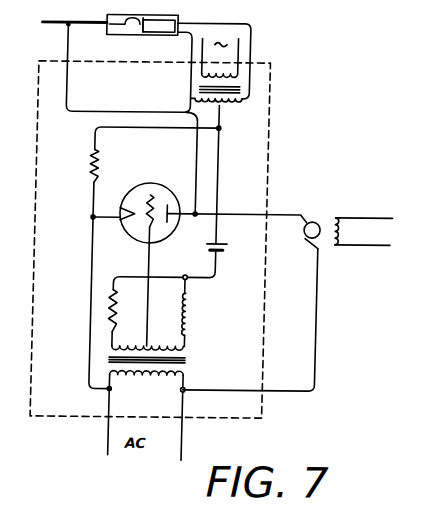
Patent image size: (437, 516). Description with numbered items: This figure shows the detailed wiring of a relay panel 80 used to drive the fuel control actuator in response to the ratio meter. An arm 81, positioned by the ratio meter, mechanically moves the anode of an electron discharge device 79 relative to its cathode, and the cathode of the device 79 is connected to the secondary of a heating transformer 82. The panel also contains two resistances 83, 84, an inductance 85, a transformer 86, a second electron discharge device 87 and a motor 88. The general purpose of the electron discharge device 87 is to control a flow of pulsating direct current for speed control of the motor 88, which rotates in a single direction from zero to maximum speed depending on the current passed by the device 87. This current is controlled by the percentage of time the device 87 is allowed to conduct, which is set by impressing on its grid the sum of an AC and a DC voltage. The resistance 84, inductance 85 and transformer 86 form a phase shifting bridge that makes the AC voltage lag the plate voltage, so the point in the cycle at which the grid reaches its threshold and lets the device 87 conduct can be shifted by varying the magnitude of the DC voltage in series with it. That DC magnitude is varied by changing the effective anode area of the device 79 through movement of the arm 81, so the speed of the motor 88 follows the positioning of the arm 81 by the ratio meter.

The electron discharge device 79 is at (146, 2).
The relay panel 80 is at (268, 158).
The arm 81 is at (91, 20).
The heating transformer 82 is at (247, 103).
The resistance 83 is at (110, 165).
The resistance 84 is at (125, 311).
The inductance 85 is at (201, 314).
The transformer 86 is at (164, 361).
The electron discharge device 87 is at (154, 183).
The motor 88 is at (349, 221).